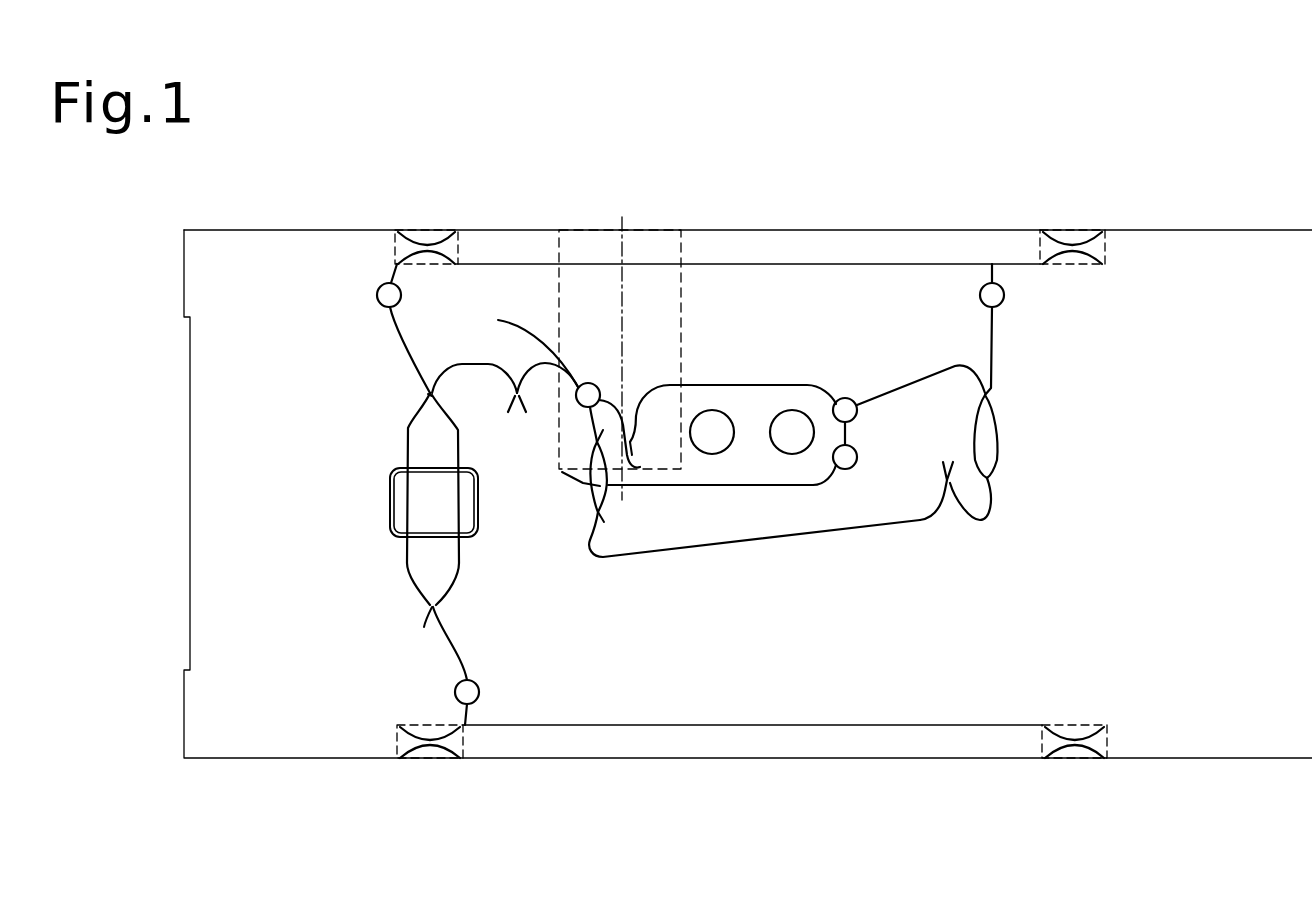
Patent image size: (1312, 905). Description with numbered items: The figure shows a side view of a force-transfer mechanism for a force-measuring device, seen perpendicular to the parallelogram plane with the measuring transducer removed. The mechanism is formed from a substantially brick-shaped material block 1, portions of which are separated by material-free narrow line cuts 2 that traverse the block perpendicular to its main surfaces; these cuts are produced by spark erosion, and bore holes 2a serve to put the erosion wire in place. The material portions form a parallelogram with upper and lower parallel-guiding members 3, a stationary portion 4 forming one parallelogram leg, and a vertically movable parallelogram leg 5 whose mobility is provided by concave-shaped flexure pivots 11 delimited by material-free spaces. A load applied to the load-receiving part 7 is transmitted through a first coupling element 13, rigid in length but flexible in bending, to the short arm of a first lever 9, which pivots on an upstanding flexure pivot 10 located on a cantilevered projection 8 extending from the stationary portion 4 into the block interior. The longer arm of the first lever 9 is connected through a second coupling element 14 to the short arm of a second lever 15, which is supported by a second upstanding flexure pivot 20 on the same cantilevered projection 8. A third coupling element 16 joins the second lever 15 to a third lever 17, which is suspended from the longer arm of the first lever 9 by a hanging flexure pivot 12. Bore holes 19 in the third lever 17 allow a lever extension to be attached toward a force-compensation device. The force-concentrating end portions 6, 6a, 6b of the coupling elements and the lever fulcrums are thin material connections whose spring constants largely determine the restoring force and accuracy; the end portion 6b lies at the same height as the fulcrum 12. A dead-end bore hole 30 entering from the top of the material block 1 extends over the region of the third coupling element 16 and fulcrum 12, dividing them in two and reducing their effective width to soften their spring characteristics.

The material block 1 is at (1175, 215).
The narrow line cuts 2 is at (407, 563).
The bore holes 2a is at (401, 298).
The parallel-guiding members 3 is at (797, 245).
The stationary portion 4 is at (1196, 486).
The movable parallelogram leg 5 is at (239, 471).
The force-concentrating end portion 6 is at (426, 392).
The force-concentrating end portion 6a is at (607, 514).
The force-concentrating end portion 6b is at (593, 443).
The load-receiving part 7 is at (248, 228).
The cantilevered projection 8 is at (672, 643).
The first lever 9 is at (776, 333).
The flexure pivot 10 is at (513, 410).
The flexure pivots 11 is at (432, 230).
The flexure pivot 12 is at (632, 406).
The first coupling element 13 is at (382, 435).
The second coupling element 14 is at (1002, 428).
The second lever 15 is at (737, 527).
The third coupling element 16 is at (580, 485).
The third lever 17 is at (735, 473).
The bore holes 19 is at (782, 410).
The flexure pivot 20 is at (947, 495).
The dead-end bore hole 30 is at (632, 278).